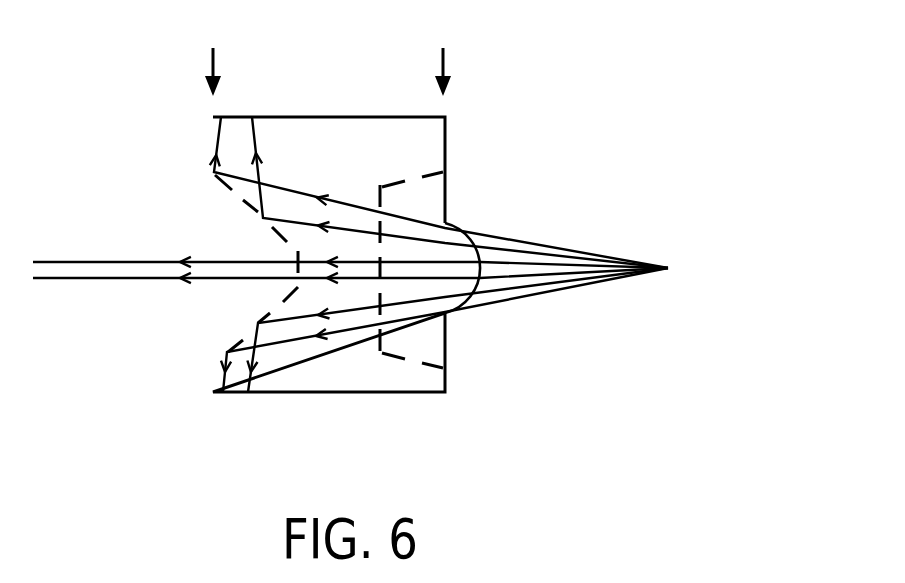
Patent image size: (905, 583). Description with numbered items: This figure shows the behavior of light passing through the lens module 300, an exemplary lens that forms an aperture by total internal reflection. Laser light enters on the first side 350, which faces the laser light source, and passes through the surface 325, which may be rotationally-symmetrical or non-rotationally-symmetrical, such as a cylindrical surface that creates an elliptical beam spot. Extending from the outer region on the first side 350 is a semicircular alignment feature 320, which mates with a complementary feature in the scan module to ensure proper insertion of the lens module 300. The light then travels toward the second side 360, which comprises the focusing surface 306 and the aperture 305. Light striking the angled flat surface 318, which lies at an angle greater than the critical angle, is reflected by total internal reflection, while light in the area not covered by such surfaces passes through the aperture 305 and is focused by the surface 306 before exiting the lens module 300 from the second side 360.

The lens module 300 is at (363, 471).
The aperture 305 is at (169, 263).
The focusing surface 306 is at (297, 255).
The flat surface 318 is at (258, 323).
The alignment feature 320 is at (477, 285).
The surface 325 is at (382, 196).
The first side 350 is at (448, 53).
The second side 360 is at (213, 53).